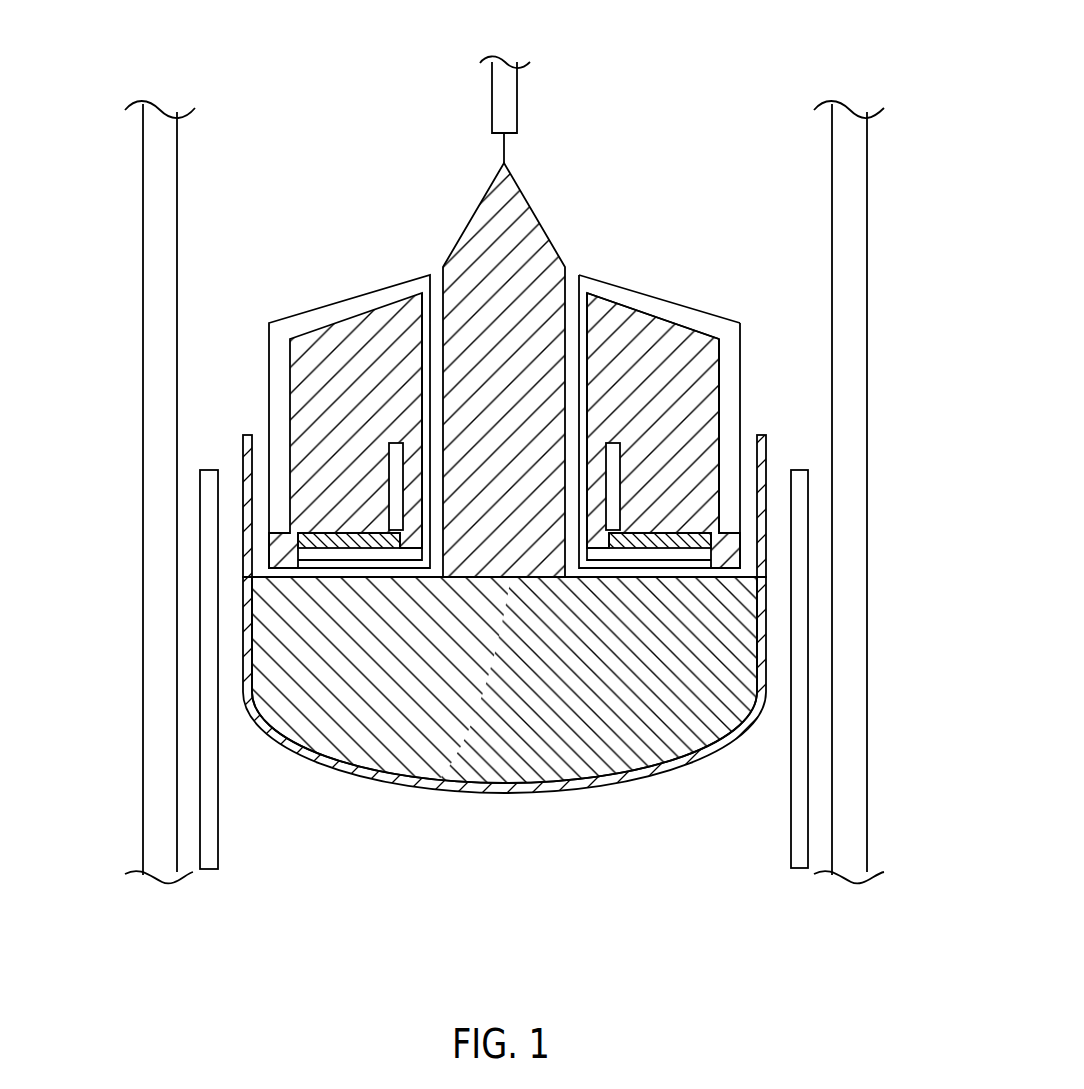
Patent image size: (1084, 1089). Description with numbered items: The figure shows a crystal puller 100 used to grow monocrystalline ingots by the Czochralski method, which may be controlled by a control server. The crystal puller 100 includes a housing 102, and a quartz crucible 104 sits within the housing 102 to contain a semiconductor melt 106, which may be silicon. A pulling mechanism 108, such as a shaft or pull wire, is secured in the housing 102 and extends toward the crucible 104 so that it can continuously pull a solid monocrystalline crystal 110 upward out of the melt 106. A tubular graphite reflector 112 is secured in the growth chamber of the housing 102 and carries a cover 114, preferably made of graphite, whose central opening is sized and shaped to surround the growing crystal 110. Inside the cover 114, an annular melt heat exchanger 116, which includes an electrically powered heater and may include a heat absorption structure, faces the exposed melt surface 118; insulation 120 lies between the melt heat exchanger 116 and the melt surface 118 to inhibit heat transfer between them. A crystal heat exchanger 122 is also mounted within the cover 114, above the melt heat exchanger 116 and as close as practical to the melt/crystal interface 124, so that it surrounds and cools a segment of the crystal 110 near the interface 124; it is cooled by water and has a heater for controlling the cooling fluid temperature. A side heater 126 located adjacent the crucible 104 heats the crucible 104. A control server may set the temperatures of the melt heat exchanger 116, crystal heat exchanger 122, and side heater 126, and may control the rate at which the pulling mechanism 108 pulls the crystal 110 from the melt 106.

The crystal puller 100 is at (727, 68).
The housing 102 is at (177, 188).
The quartz crucible 104 is at (630, 784).
The semiconductor melt 106 is at (558, 692).
The pulling mechanism 108 is at (518, 98).
The crystal 110 is at (537, 213).
The tubular graphite reflector 112 is at (748, 328).
The cover 114 is at (687, 315).
The melt heat exchanger 116 is at (363, 547).
The melt surface 118 is at (290, 577).
The insulation 120 is at (356, 330).
The crystal heat exchanger 122 is at (717, 360).
The melt/crystal interface 124 is at (510, 582).
The side heater 126 is at (800, 853).